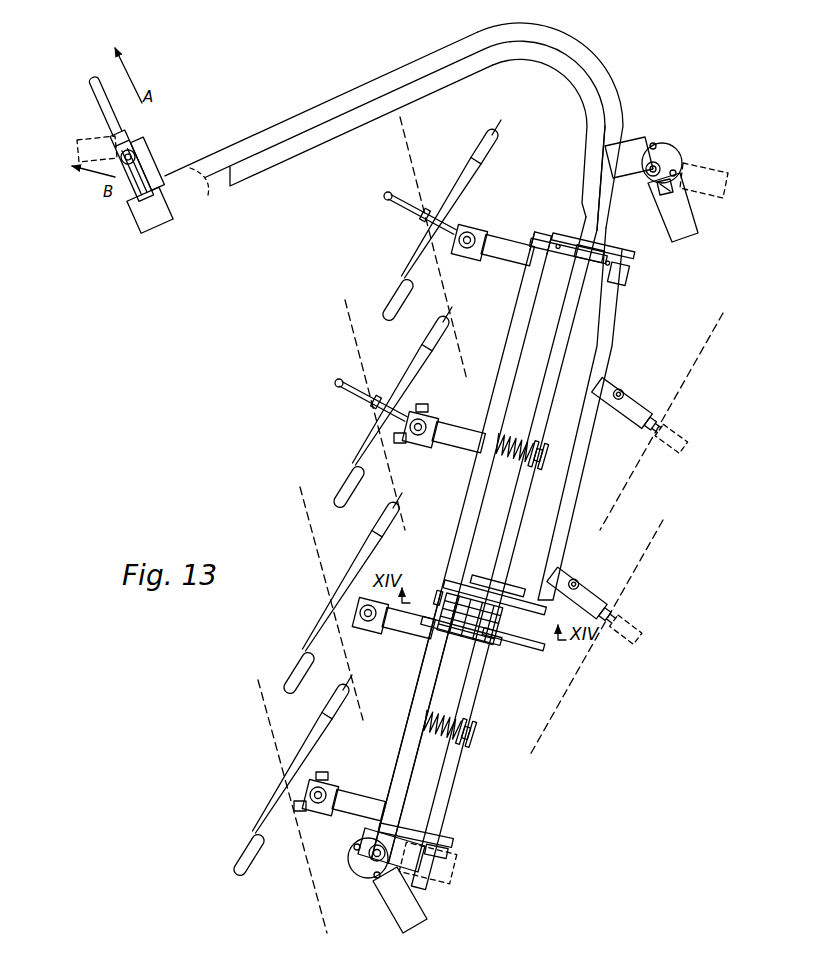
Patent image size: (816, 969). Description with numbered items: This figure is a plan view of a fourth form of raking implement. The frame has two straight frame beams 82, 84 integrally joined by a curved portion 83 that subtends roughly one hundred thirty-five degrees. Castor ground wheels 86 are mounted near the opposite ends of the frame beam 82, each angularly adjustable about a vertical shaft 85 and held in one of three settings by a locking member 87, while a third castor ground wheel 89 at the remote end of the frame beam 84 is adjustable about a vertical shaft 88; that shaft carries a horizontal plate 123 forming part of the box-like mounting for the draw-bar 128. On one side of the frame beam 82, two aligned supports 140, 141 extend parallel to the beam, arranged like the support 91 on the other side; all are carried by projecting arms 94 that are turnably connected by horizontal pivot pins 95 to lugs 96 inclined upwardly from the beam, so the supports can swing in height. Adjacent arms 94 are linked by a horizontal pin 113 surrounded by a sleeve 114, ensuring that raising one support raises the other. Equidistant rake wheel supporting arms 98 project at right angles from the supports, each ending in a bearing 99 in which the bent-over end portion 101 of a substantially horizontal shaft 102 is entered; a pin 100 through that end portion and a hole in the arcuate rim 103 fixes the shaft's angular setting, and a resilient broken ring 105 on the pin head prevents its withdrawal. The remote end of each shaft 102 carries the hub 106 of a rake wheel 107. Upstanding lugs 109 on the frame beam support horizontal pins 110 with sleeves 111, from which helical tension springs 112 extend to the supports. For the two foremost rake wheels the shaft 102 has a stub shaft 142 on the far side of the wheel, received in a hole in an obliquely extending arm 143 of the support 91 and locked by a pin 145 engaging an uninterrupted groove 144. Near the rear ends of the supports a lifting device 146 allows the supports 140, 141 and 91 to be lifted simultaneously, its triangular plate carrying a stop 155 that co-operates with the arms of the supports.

The frame beam 82 is at (546, 377).
The curved portion 83 is at (605, 82).
The frame beam 84 is at (312, 113).
The vertical shaft 85 is at (670, 150).
The castor ground wheel 86 is at (690, 240).
The locking member 87 is at (648, 142).
The vertical shaft 88 is at (176, 160).
The castor ground wheel 89 is at (165, 232).
The support 91 is at (615, 332).
The projecting arm 94 is at (538, 247).
The horizontal pivot pin 95 is at (560, 236).
The lug 96 is at (556, 242).
The rake wheel supporting arm 98 is at (516, 266).
The bearing 99 is at (478, 238).
The pin 100 is at (462, 255).
The end portion 101 is at (466, 232).
The shaft 102 is at (447, 220).
The arcuate rim 103 is at (413, 438).
The broken ring 105 is at (425, 415).
The hub 106 is at (446, 198).
The rake wheel 107 is at (410, 249).
The upstanding lug 109 is at (540, 450).
The horizontal pin 110 is at (536, 472).
The sleeve 111 is at (546, 463).
The helical tension spring 112 is at (510, 458).
The horizontal pin 113 is at (600, 225).
The sleeve 114 is at (550, 258).
The horizontal plate 123 is at (138, 142).
The draw-bar 128 is at (122, 122).
The support 140 is at (470, 497).
The support 141 is at (422, 683).
The stub shaft 142 is at (400, 206).
The arm 143 is at (612, 386).
The groove 144 is at (392, 196).
The pin 145 is at (621, 395).
The lifting device 146 is at (470, 620).
The stop 155 is at (448, 592).